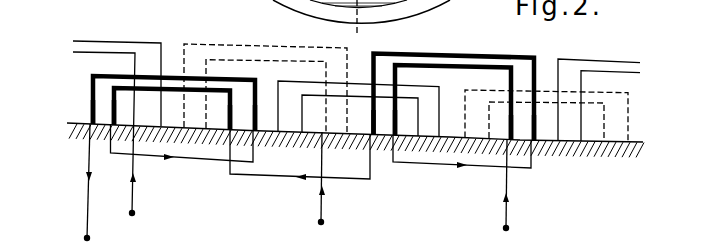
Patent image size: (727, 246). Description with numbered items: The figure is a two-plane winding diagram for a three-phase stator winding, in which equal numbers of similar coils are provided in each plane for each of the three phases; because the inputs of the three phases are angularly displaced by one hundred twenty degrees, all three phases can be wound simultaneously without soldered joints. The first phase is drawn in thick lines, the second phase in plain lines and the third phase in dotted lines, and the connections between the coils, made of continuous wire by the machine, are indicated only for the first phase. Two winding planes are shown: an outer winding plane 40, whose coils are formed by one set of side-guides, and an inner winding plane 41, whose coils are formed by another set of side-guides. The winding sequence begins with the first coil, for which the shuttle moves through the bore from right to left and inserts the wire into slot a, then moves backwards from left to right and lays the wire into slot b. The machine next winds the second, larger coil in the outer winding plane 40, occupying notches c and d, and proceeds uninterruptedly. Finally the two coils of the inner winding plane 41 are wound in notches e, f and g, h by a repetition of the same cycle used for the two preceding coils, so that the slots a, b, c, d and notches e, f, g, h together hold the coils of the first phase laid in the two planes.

The outer winding plane 40 is at (161, 46).
The inner winding plane 41 is at (236, 66).
The slot a is at (503, 173).
The slot b is at (462, 139).
The notch c is at (527, 128).
The notch d is at (380, 124).
The notch e is at (300, 142).
The notch f is at (182, 131).
The notch g is at (290, 165).
The notch h is at (95, 170).